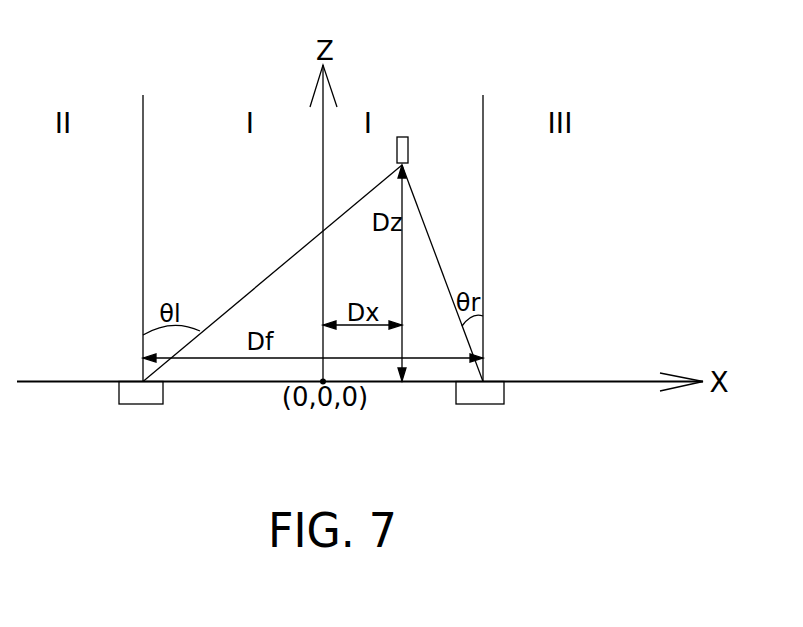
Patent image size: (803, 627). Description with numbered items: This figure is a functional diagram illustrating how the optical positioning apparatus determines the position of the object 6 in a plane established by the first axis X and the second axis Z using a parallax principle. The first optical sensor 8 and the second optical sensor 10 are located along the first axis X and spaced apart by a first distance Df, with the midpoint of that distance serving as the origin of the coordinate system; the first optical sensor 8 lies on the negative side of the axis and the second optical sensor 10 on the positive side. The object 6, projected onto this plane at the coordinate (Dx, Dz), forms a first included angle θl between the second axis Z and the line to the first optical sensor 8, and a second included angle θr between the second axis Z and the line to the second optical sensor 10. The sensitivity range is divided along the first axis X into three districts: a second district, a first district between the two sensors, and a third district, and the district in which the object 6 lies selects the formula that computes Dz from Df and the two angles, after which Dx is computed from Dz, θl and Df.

The object 6 is at (402, 137).
The first optical sensor 8 is at (143, 404).
The second optical sensor 10 is at (485, 404).